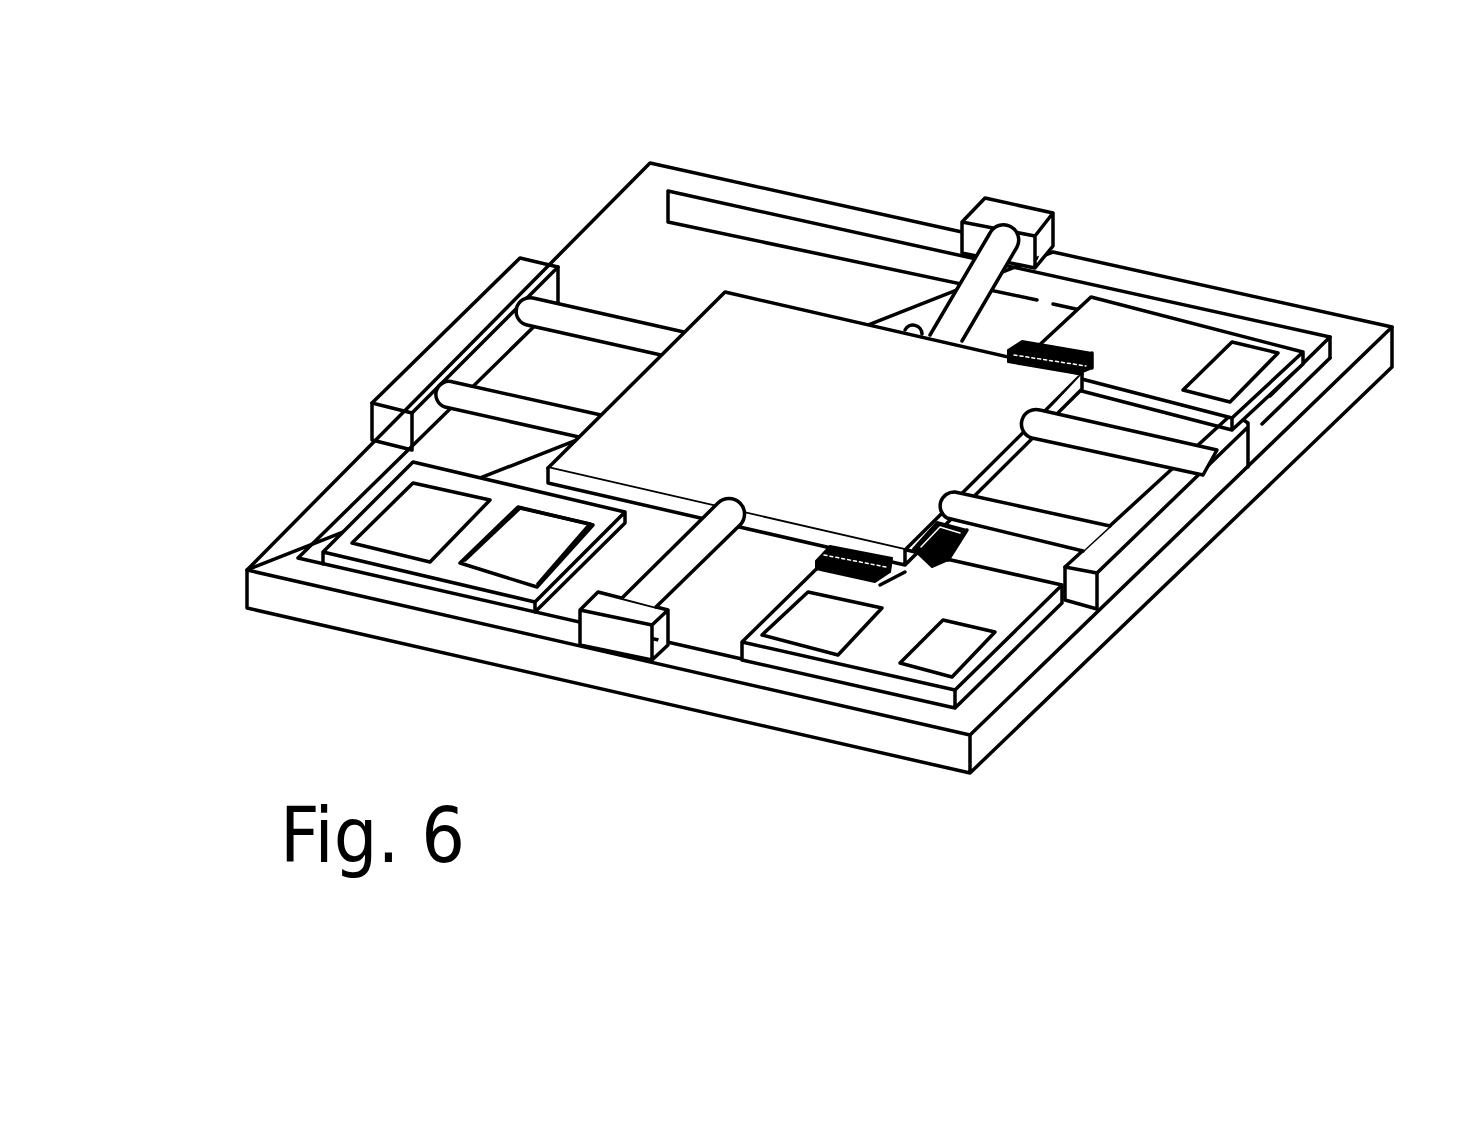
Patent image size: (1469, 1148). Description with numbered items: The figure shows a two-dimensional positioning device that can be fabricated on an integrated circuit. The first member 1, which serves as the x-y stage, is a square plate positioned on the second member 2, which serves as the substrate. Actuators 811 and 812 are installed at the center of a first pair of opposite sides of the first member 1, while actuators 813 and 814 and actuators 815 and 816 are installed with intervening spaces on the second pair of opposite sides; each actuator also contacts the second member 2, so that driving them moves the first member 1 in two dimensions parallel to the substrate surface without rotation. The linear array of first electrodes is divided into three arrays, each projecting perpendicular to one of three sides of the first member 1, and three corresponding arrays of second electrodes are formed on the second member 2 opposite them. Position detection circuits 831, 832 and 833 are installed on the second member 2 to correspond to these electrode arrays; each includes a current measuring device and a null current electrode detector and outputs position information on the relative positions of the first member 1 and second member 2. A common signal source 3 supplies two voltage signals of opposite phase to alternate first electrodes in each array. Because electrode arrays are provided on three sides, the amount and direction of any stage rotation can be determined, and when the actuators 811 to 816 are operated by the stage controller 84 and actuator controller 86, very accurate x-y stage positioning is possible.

The first member 1 is at (785, 332).
The second member 2 is at (720, 192).
The common signal source 3 is at (512, 563).
The actuator 811 is at (990, 252).
The actuator 812 is at (623, 585).
The actuator 813 is at (580, 317).
The actuator 814 is at (492, 397).
The actuator 815 is at (1090, 518).
The actuator 816 is at (1108, 517).
The position detection circuit 831 is at (812, 634).
The position detection circuit 832 is at (972, 652).
The position detection circuit 833 is at (1237, 362).
The stage controller 84 is at (392, 536).
The actuator controller 86 is at (526, 547).